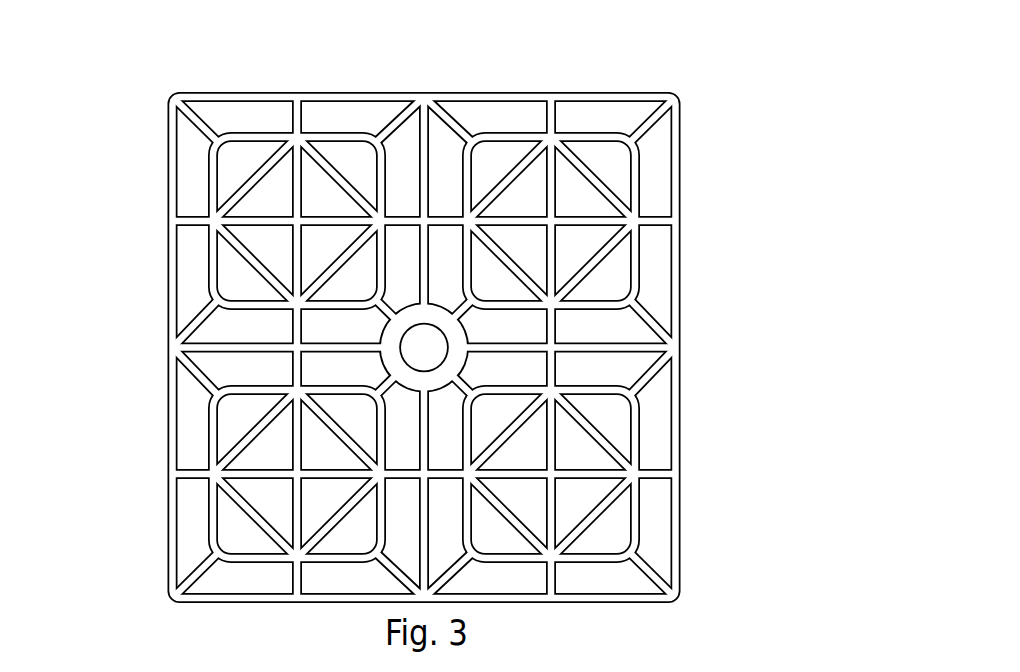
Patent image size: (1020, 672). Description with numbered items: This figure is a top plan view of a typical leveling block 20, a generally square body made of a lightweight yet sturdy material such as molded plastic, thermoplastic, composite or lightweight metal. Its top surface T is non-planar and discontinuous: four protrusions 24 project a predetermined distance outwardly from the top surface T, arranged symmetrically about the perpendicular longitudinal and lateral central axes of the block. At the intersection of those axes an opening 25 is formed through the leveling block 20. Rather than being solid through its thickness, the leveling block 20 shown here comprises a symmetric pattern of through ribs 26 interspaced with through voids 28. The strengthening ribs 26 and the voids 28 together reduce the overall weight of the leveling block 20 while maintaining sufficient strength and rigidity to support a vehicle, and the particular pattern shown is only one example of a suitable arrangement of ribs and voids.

The leveling block 20 is at (63, 97).
The protrusion 24 is at (282, 147).
The opening 25 is at (435, 345).
The through rib 26 is at (192, 580).
The through void 28 is at (245, 582).
The top surface T is at (677, 340).